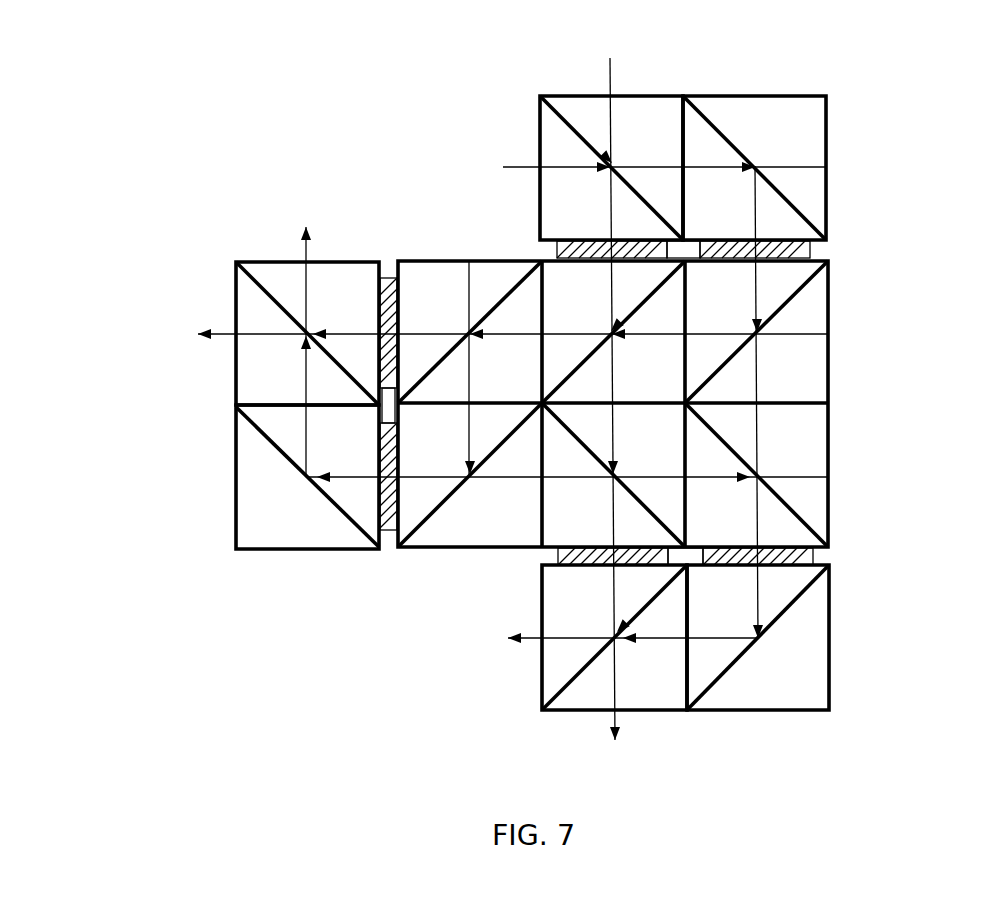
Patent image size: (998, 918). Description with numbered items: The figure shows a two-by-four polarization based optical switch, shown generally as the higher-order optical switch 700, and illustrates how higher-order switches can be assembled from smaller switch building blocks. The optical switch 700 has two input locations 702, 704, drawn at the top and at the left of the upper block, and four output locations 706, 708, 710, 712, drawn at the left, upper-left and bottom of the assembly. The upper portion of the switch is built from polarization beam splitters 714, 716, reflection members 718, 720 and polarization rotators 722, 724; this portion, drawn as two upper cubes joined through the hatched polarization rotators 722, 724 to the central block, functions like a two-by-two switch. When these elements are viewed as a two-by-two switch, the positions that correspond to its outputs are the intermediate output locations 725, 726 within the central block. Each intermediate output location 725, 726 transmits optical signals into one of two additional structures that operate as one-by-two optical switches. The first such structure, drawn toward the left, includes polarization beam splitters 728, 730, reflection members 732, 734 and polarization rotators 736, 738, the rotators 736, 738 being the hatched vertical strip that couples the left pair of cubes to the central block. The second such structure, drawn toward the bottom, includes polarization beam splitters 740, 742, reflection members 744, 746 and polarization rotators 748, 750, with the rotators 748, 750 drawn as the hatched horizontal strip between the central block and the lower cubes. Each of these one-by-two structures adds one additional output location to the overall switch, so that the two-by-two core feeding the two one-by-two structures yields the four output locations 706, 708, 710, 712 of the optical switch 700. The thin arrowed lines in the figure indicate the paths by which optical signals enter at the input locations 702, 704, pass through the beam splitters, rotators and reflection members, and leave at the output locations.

The higher-order optical switch 700 is at (889, 86).
The input location 702 is at (598, 88).
The input location 704 is at (530, 158).
The output location 706 is at (295, 253).
The output location 708 is at (226, 321).
The output location 710 is at (531, 655).
The output location 712 is at (603, 720).
The polarization beam splitter 714 is at (648, 100).
The polarization beam splitter 716 is at (590, 305).
The reflection member 718 is at (795, 98).
The reflection member 720 is at (818, 313).
The polarization rotator 722 is at (557, 254).
The polarization rotator 724 is at (810, 238).
The intermediate output location 725 is at (627, 408).
The intermediate output location 726 is at (526, 316).
The polarization beam splitter 728 is at (467, 262).
The polarization beam splitter 730 is at (238, 372).
The reflection member 732 is at (238, 485).
The reflection member 734 is at (468, 546).
The polarization rotator 736 is at (387, 548).
The polarization rotator 738 is at (380, 260).
The polarization beam splitter 740 is at (664, 467).
The polarization beam splitter 742 is at (653, 704).
The reflection member 744 is at (818, 438).
The reflection member 746 is at (822, 650).
The polarization rotator 748 is at (815, 557).
The polarization rotator 750 is at (558, 553).